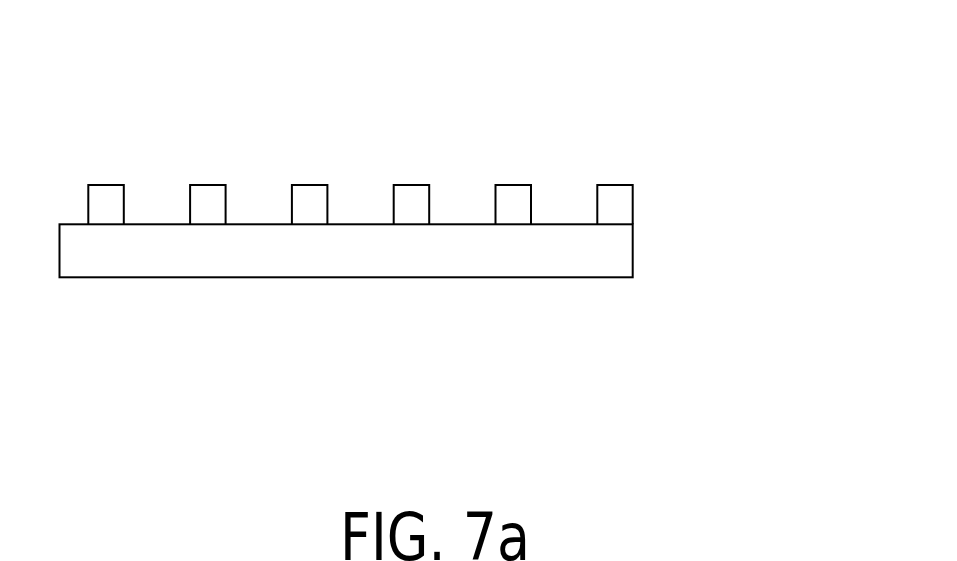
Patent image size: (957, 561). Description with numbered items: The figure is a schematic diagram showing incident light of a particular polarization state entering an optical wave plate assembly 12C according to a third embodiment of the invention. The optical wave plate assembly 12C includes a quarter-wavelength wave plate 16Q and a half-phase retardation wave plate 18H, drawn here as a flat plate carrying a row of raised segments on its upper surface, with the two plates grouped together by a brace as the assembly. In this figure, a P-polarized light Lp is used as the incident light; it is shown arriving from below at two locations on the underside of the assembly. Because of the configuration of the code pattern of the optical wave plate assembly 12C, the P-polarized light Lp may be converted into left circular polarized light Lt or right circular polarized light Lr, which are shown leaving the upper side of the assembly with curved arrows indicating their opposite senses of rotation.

The optical wave plate assembly 12C is at (772, 177).
The quarter-wavelength wave plate 16Q is at (634, 258).
The half-phase retardation wave plate 18H is at (643, 212).
The left circular polarized light Lt is at (258, 173).
The right circular polarized light Lr is at (434, 173).
The P-polarized light Lp is at (258, 292).